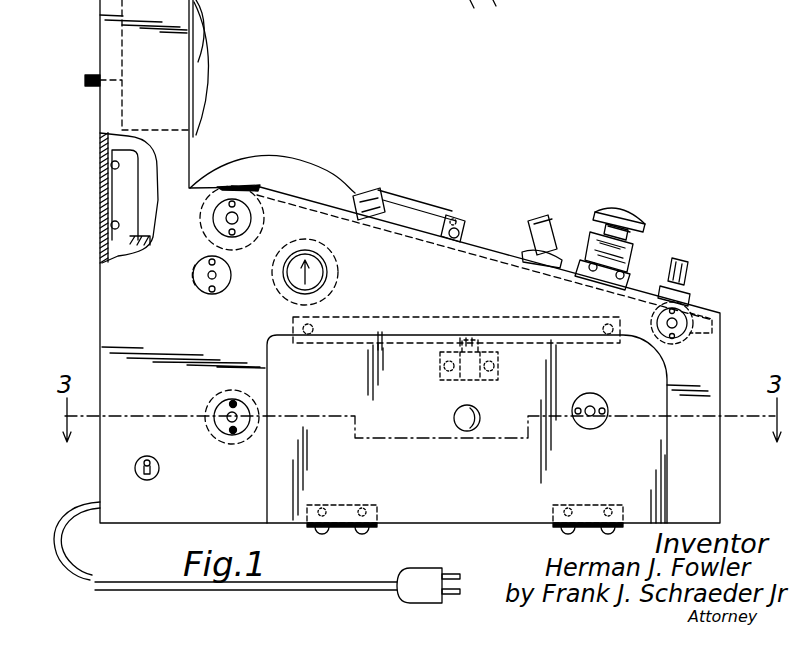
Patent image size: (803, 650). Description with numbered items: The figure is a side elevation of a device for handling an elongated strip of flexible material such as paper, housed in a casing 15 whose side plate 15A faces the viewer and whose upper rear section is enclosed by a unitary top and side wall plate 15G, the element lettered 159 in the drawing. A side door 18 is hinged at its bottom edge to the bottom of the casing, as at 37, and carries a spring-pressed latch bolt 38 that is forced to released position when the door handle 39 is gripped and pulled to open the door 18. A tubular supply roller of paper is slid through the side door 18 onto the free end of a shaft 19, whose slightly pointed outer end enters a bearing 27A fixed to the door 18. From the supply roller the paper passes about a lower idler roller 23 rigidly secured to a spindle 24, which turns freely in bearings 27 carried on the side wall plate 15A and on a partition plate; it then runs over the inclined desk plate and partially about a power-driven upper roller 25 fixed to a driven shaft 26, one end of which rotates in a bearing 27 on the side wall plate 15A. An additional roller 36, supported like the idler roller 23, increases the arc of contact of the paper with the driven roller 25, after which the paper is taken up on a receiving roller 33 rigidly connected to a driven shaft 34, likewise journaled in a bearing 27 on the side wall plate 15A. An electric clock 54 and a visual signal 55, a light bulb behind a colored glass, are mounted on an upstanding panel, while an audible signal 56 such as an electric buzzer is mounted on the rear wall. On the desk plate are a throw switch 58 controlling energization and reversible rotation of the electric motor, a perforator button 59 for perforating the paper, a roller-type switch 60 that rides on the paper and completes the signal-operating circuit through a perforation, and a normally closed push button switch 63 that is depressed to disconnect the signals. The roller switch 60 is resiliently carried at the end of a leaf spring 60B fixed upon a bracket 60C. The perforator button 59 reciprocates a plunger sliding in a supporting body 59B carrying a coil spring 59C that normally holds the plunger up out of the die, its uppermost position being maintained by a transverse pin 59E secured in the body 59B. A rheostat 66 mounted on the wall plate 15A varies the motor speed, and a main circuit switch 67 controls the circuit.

The casing 15 is at (151, 537).
The side plate 15A is at (117, 307).
The unitary top and side wall plate 15G is at (280, 154).
The arcuate guard 159 is at (272, 160).
The side door 18 is at (665, 385).
The shaft 19 is at (598, 405).
The lower idler roller 23 is at (722, 326).
The spindle 24 is at (667, 323).
The power-driven upper roller 25 is at (200, 222).
The driven shaft 26 is at (236, 218).
The bearings 27 is at (218, 228).
The bearing 27A is at (600, 420).
The receiving roller 33 is at (213, 392).
The driven shaft 34 is at (228, 416).
The additional roller 36 is at (192, 268).
The hinge 37 is at (338, 532).
The spring-pressed latch bolt 38 is at (467, 378).
The door handle 39 is at (454, 418).
The electric clock 54 is at (200, 50).
The visual signal 55 is at (207, 16).
The audible signal 56 is at (122, 189).
The throw switch 58 is at (545, 218).
The perforator button 59 is at (625, 210).
The supporting body 59B is at (630, 250).
The coil spring 59C is at (646, 228).
The transverse pin 59E is at (612, 244).
The roller-type switch 60 is at (468, 231).
The leaf spring 60B is at (447, 192).
The bracket 60C is at (340, 192).
The push button switch 63 is at (690, 270).
The rheostat 66 is at (320, 275).
The main circuit switch 67 is at (160, 468).